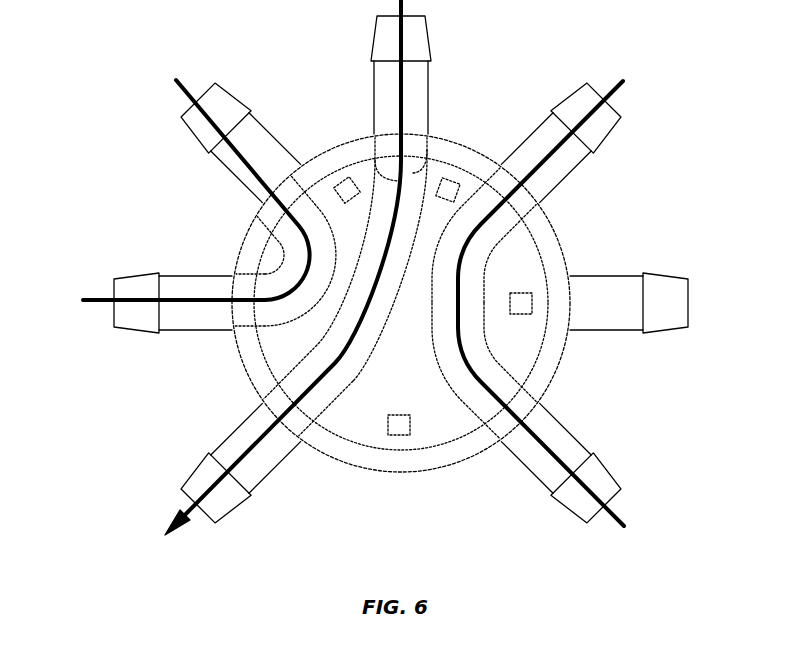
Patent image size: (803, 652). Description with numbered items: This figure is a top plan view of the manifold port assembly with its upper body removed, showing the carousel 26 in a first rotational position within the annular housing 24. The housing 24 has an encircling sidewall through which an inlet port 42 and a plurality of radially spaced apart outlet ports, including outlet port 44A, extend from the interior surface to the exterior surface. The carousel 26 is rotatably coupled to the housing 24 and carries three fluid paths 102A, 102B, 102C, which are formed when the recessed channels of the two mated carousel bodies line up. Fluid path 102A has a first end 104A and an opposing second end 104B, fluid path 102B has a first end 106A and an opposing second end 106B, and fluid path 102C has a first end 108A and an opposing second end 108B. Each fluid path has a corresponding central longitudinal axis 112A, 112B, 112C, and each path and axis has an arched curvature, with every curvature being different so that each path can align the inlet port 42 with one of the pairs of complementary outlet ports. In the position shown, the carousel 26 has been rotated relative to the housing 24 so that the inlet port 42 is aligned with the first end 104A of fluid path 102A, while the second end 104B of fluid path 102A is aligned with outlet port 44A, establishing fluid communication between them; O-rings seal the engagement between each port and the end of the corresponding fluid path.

The housing 24 is at (556, 346).
The carousel 26 is at (422, 417).
The inlet port 42 is at (440, 176).
The outlet port 44A is at (296, 384).
The fluid path 102A is at (416, 214).
The fluid path 102B is at (290, 256).
The fluid path 102C is at (472, 275).
The first end 104A is at (372, 178).
The second end 104B is at (310, 407).
The first end 106A is at (283, 230).
The second end 106B is at (266, 340).
The first end 108A is at (515, 228).
The second end 108B is at (517, 368).
The central longitudinal axis 112A is at (210, 497).
The central longitudinal axis 112B is at (133, 305).
The central longitudinal axis 112C is at (566, 450).